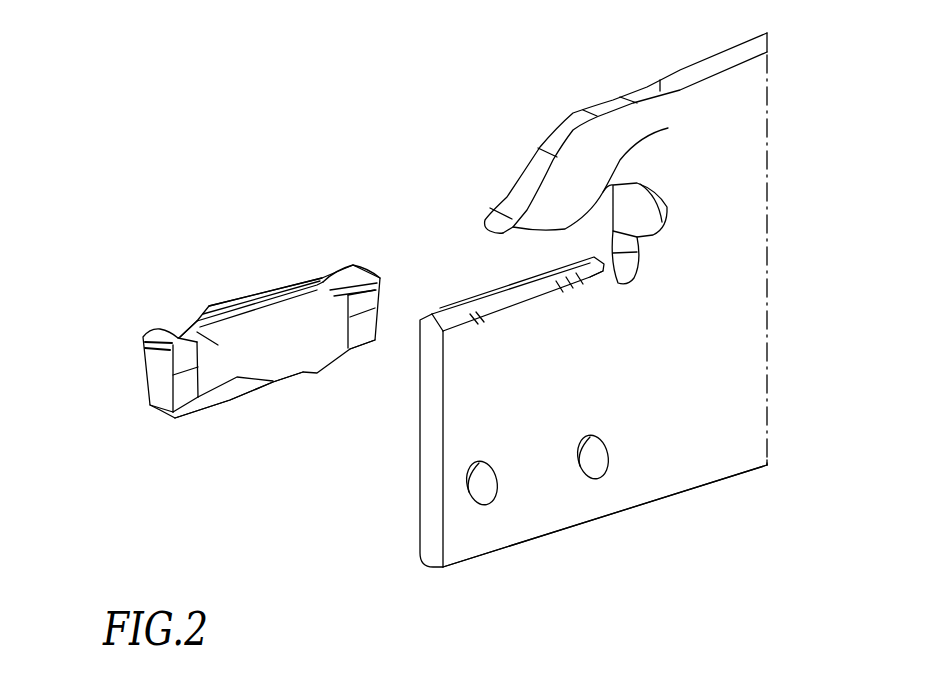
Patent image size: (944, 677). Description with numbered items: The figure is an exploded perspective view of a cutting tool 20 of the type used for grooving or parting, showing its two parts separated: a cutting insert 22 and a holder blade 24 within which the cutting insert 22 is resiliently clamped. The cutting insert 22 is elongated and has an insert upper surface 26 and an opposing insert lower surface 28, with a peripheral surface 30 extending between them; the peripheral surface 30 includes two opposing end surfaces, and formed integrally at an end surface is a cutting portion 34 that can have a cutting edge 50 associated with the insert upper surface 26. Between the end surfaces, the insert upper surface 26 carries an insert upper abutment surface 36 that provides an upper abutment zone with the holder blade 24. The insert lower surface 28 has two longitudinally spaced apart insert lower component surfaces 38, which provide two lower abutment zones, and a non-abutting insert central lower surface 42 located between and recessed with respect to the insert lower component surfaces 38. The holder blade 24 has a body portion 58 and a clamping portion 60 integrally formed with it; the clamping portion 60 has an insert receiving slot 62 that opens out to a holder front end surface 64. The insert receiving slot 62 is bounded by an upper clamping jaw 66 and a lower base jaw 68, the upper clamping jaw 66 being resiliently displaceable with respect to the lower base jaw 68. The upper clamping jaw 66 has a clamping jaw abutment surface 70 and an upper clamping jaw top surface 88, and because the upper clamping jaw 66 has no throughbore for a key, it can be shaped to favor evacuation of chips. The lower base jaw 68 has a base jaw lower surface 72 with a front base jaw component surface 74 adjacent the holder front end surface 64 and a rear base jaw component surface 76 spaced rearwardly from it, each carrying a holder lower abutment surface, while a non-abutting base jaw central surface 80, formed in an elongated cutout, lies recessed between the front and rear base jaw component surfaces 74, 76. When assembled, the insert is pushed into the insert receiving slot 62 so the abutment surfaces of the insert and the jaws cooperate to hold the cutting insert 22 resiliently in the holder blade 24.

The cutting tool 20 is at (795, 232).
The cutting insert 22 is at (200, 296).
The holder blade 24 is at (640, 550).
The insert upper surface 26 is at (252, 288).
The insert lower surface 28 is at (302, 412).
The peripheral surface 30 is at (190, 320).
The cutting portion 34 is at (127, 380).
The insert upper abutment surface 36 is at (281, 295).
The insert lower component surface 38 is at (175, 445).
The non-abutting insert central lower surface 42 is at (275, 383).
The cutting edge 50 is at (143, 347).
The body portion 58 is at (808, 293).
The clamping portion 60 is at (487, 157).
The insert receiving slot 62 is at (474, 264).
The holder front end surface 64 is at (433, 537).
The upper clamping jaw 66 is at (594, 82).
The lower base jaw 68 is at (587, 561).
The clamping jaw abutment surface 70 is at (652, 131).
The base jaw lower surface 72 is at (452, 230).
The front base jaw component surface 74 is at (459, 302).
The rear base jaw component surface 76 is at (575, 262).
The non-abutting base jaw central surface 80 is at (521, 293).
The upper clamping jaw top surface 88 is at (523, 175).